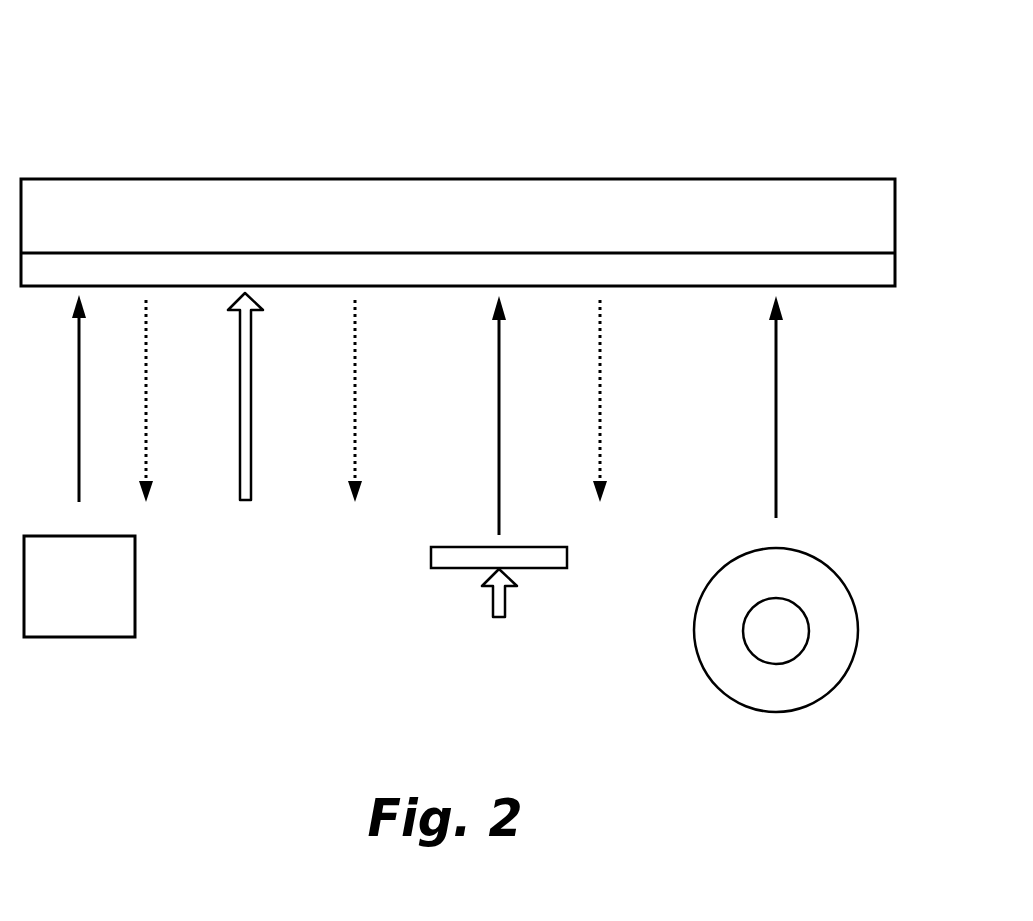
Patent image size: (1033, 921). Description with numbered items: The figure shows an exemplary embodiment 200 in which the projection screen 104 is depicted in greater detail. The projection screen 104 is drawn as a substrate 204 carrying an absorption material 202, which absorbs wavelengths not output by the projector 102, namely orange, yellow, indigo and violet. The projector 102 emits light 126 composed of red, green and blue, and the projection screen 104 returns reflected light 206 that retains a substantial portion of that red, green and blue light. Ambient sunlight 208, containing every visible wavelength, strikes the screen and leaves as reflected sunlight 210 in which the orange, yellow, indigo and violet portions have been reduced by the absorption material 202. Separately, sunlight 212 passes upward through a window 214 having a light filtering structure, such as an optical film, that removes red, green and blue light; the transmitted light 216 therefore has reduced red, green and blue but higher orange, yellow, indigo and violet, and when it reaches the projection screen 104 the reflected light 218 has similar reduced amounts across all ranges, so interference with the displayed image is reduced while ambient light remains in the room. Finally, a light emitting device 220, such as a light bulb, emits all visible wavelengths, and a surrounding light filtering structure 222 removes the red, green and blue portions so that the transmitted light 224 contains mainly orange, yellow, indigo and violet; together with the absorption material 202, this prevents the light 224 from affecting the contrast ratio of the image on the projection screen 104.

The exemplary embodiment 200 is at (225, 49).
The projection screen 104 is at (456, 178).
The substrate 204 is at (525, 227).
The absorption material 202 is at (575, 280).
The projector 102 is at (98, 609).
The light 126 is at (77, 464).
The reflected light 206 is at (148, 466).
The sunlight 208 is at (239, 363).
The reflected sunlight 210 is at (357, 365).
The sunlight 212 is at (492, 614).
The window 214 is at (430, 556).
The light 216 is at (497, 480).
The light 218 is at (598, 404).
The light emitting device 220 is at (757, 642).
The light filtering structure 222 is at (717, 573).
The light 224 is at (774, 454).